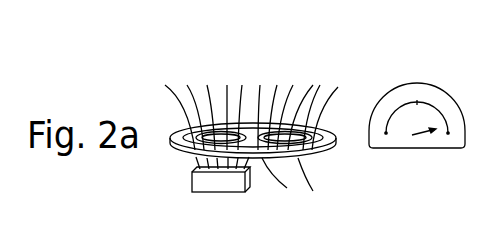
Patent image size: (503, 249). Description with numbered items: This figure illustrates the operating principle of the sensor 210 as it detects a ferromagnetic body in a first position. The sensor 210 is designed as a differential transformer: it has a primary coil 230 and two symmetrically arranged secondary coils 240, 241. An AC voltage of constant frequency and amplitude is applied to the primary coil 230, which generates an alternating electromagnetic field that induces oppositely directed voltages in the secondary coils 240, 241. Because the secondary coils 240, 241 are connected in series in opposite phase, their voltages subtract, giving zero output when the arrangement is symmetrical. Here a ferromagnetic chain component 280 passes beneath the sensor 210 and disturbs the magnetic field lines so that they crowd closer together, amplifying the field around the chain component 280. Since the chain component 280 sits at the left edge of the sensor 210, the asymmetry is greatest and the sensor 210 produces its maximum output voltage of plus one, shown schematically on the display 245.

The sensor A 210 is at (251, 92).
The secondary coil 240 is at (318, 122).
The secondary coil 241 is at (185, 151).
The ferromagnetic chain component 280 is at (208, 182).
The primary coil 230 is at (322, 154).
The display 245 is at (417, 132).